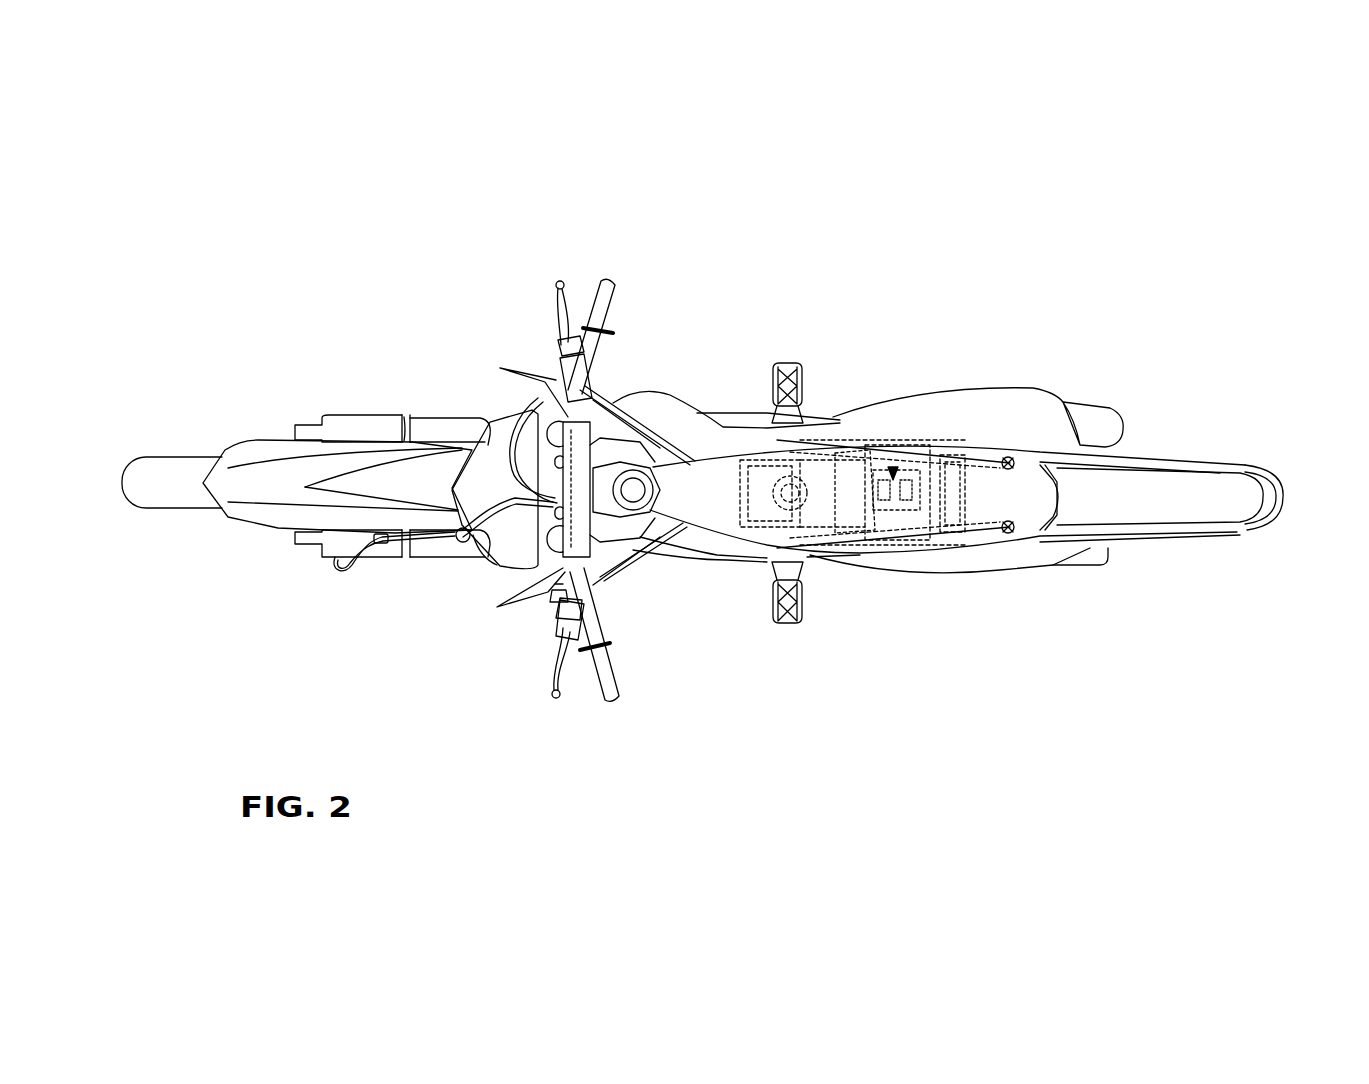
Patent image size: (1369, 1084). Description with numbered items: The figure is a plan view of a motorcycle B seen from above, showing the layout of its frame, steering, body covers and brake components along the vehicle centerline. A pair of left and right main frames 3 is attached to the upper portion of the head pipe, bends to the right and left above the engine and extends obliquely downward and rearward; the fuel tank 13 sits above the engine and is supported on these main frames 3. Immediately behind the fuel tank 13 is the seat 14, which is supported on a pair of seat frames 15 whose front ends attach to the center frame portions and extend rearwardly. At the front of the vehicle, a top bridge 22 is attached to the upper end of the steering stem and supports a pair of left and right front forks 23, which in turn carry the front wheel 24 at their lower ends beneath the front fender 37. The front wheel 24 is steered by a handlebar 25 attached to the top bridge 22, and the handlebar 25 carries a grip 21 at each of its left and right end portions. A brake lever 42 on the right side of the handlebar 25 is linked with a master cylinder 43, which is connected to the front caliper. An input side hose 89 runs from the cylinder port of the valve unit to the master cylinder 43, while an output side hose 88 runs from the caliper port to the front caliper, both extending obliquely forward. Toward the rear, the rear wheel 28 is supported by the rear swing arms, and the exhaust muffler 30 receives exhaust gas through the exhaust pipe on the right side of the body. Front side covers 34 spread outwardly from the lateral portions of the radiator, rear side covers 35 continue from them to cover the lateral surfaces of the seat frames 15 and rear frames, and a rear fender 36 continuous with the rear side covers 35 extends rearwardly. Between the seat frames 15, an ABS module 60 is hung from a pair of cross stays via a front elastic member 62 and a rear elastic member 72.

The motorcycle B is at (908, 275).
The main frame 3 is at (640, 420).
The fuel tank 13 is at (613, 450).
The seat 14 is at (1030, 510).
The seat frame 15 is at (847, 447).
The grip 21 is at (617, 295).
The top bridge 22 is at (520, 548).
The front fork 23 is at (363, 422).
The front wheel 24 is at (153, 467).
The handlebar 25 is at (583, 595).
The rear wheel 28 is at (1277, 473).
The exhaust muffler 30 is at (1103, 412).
The front side cover 34 is at (522, 607).
The rear side cover 35 is at (993, 400).
The rear fender 36 is at (1192, 487).
The front fender 37 is at (257, 470).
The brake lever 42 is at (560, 302).
The master cylinder 43 is at (560, 377).
The ABS module 60 is at (887, 447).
The front elastic member 62 is at (883, 553).
The rear elastic member 72 is at (933, 550).
The output side hose 88 is at (437, 542).
The input side hose 89 is at (503, 422).